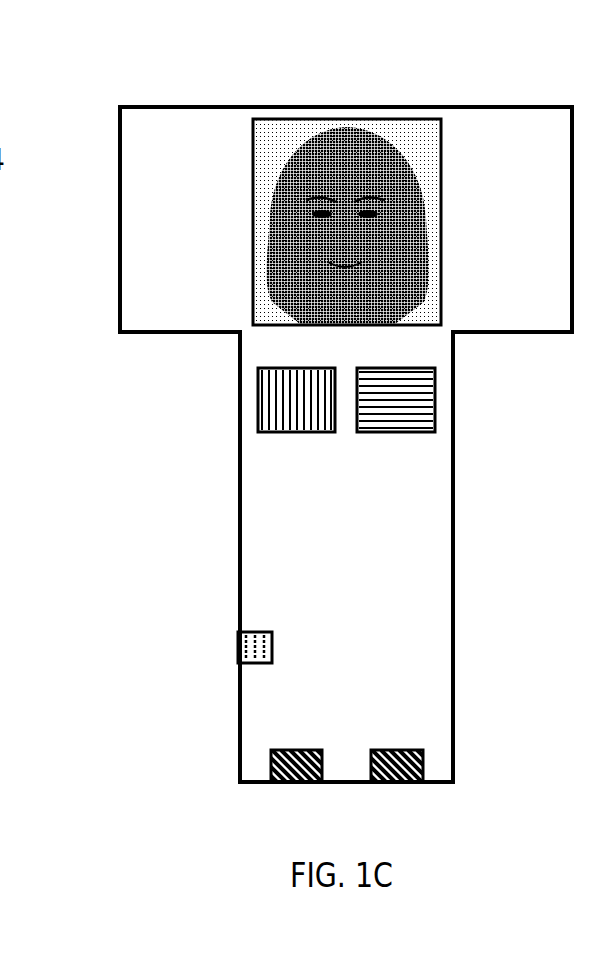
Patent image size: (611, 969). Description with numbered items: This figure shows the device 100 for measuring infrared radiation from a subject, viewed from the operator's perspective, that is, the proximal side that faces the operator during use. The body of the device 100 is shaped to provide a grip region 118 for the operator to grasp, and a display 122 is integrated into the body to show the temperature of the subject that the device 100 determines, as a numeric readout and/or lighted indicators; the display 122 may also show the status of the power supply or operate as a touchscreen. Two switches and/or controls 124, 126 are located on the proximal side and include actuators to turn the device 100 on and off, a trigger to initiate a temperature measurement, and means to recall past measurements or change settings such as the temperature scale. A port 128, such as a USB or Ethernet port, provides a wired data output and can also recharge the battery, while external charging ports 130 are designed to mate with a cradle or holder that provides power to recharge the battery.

The device 100 is at (176, 90).
The grip region 118 is at (215, 549).
The display 122 is at (457, 116).
The switches and/or controls 124 is at (247, 409).
The switches and/or controls 126 is at (450, 398).
The port 128 is at (224, 648).
The external charging ports 130 is at (336, 741).